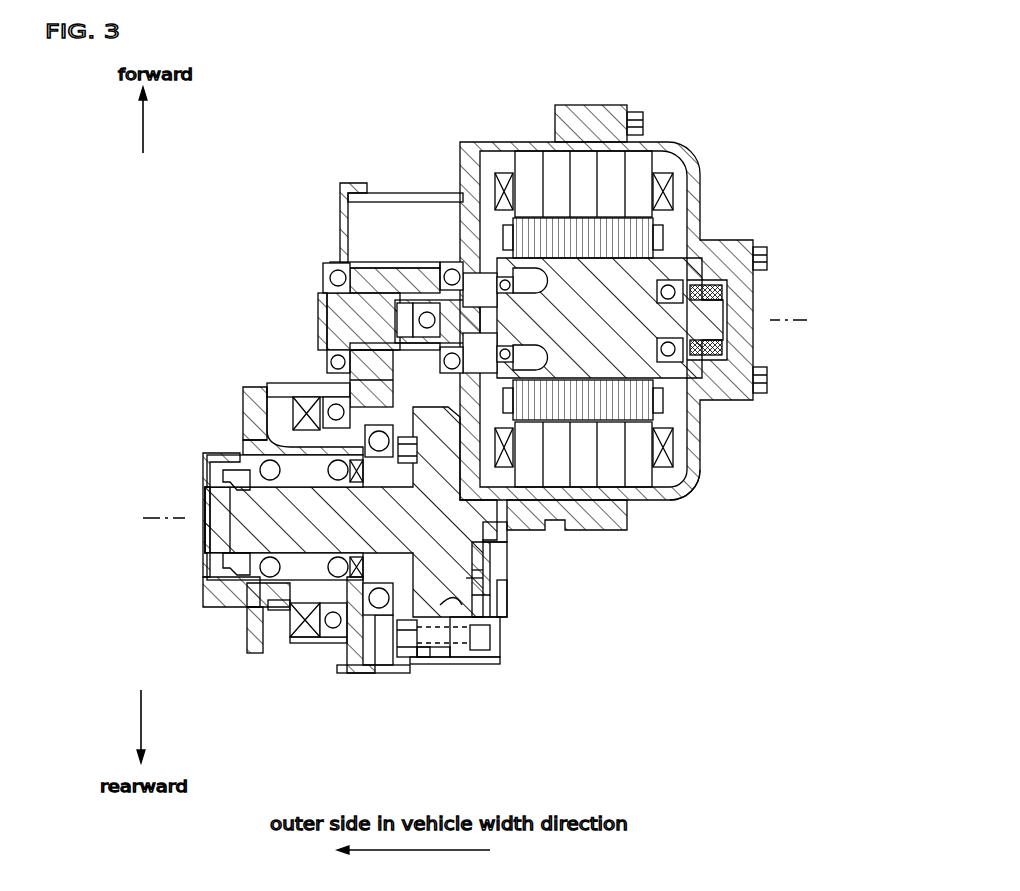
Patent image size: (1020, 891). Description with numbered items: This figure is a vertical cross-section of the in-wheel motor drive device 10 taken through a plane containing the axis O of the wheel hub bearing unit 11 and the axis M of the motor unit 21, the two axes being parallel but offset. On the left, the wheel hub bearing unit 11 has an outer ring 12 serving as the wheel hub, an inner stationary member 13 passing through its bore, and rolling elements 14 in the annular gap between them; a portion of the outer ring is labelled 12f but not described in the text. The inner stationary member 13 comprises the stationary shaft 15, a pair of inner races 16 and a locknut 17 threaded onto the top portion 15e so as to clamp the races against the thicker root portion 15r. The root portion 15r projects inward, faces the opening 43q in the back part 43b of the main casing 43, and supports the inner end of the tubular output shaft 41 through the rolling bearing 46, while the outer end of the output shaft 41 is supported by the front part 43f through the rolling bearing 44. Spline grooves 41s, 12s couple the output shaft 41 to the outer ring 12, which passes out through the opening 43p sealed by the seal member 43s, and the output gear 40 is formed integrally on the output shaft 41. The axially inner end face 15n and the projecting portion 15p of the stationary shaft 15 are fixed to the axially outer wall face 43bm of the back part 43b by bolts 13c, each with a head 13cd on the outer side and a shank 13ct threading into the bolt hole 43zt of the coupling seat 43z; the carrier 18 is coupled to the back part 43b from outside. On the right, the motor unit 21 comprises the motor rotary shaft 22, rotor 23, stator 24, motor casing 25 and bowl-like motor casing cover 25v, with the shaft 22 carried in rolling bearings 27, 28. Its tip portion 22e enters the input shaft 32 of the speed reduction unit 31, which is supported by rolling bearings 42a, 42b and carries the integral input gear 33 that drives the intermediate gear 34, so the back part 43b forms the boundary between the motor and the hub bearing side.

The in-wheel motor drive device 10 is at (714, 118).
The wheel hub bearing unit 11 is at (160, 394).
The outer ring 12 is at (240, 582).
The outer ring flange 12f is at (250, 650).
The spline grooves 12s is at (378, 599).
The inner stationary member 13 is at (184, 507).
The bolt 13c is at (320, 446).
The head 13cd is at (388, 680).
The shank 13ct is at (422, 680).
The rolling elements 14 is at (270, 578).
The stationary shaft 15 is at (490, 523).
The top portion 15e is at (212, 533).
The axially inner end face 15n is at (472, 570).
The projecting portion 15p is at (433, 680).
The root portion 15r is at (466, 578).
The inner races 16 is at (242, 461).
The locknut 17 is at (227, 558).
The carrier 18 is at (505, 598).
The motor unit 21 is at (660, 134).
The motor rotary shaft 22 is at (648, 340).
The tip portion 22e is at (435, 313).
The rotor 23 is at (657, 224).
The stator 24 is at (643, 162).
The motor casing 25 is at (508, 150).
The motor casing cover 25v is at (677, 492).
The rolling bearing 27 is at (650, 345).
The rolling bearing 28 is at (718, 362).
The speed reduction unit 31 is at (312, 342).
The input shaft 32 is at (343, 307).
The input gear 33 is at (377, 287).
The intermediate gear 34 is at (347, 397).
The output gear 40 is at (290, 390).
The output shaft 41 is at (318, 427).
The spline grooves 41s is at (330, 645).
The rolling bearing 42a is at (330, 278).
The rolling bearing 42b is at (453, 268).
The main casing 43 is at (350, 186).
The back part 43b is at (492, 603).
The axially outer wall face 43bm is at (465, 613).
The front part 43f is at (318, 322).
The opening 43p is at (290, 414).
The opening 43q is at (495, 534).
The seal member 43s is at (303, 640).
The coupling seat 43z is at (482, 680).
The bolt hole 43zt is at (468, 680).
The rolling bearing 44 is at (327, 623).
The rolling bearing 46 is at (347, 645).
The axis O is at (157, 519).
The axis M is at (797, 321).